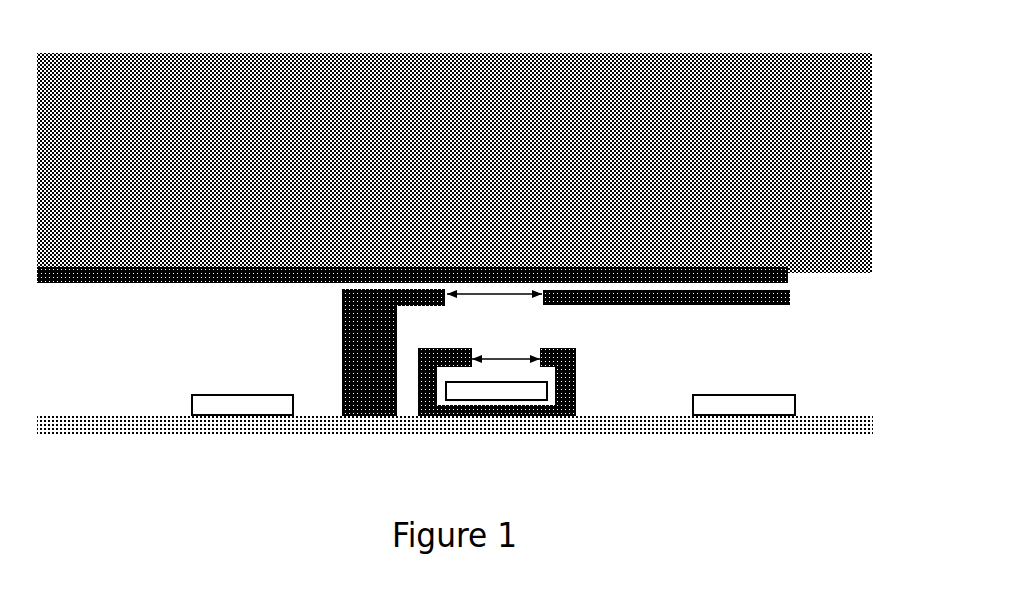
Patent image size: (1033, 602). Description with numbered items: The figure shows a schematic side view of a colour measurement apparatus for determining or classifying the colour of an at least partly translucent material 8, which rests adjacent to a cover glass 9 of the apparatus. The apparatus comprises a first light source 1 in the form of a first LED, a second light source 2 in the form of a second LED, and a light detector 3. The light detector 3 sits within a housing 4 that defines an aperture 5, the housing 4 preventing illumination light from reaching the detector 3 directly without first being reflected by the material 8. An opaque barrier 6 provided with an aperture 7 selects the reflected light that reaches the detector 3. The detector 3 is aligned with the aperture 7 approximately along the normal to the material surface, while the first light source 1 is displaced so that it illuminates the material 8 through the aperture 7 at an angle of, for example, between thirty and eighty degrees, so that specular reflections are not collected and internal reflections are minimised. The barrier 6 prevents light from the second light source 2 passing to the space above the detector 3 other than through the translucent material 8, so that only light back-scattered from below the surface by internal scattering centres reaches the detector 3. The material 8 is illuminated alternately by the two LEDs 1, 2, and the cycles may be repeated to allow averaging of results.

The first light source 1 is at (795, 395).
The second light source 2 is at (205, 395).
The light detector 3 is at (570, 415).
The housing 4 is at (575, 352).
The aperture 5 is at (500, 357).
The opaque barrier 6 is at (342, 337).
The aperture 7 is at (492, 293).
The translucent material 8 is at (628, 53).
The cover glass 9 is at (101, 280).